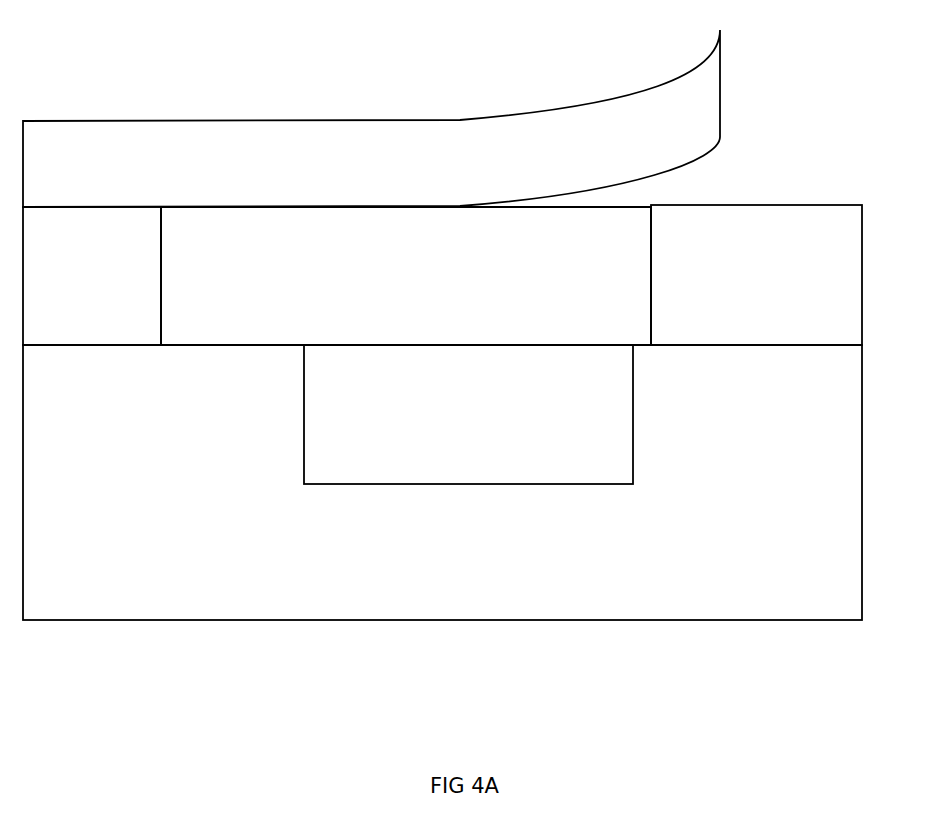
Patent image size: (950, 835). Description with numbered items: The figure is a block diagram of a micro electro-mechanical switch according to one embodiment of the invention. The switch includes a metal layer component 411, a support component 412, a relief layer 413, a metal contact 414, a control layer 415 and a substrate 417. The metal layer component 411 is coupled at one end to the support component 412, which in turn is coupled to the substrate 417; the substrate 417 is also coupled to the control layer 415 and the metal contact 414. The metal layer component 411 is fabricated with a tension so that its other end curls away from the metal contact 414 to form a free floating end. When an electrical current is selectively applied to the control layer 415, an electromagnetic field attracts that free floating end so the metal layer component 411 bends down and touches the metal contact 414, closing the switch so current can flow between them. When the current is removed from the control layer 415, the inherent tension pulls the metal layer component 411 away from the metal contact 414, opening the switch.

The metal layer component 411 is at (371, 118).
The support component 412 is at (92, 276).
The relief layer 413 is at (406, 276).
The metal contact 414 is at (756, 275).
The control layer 415 is at (468, 414).
The substrate 417 is at (442, 482).